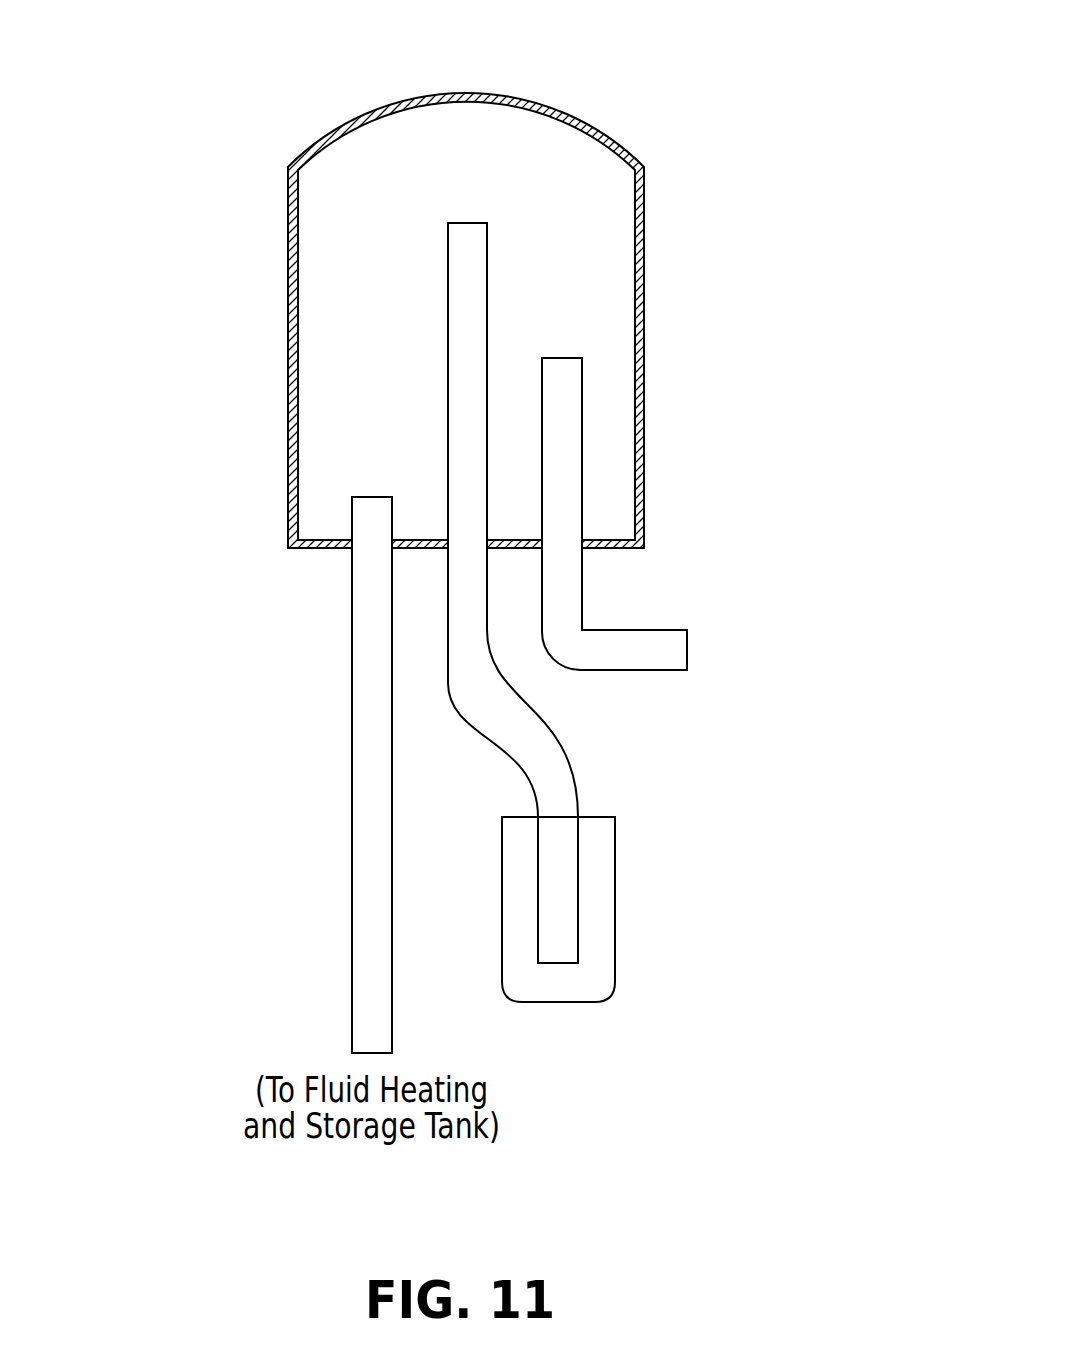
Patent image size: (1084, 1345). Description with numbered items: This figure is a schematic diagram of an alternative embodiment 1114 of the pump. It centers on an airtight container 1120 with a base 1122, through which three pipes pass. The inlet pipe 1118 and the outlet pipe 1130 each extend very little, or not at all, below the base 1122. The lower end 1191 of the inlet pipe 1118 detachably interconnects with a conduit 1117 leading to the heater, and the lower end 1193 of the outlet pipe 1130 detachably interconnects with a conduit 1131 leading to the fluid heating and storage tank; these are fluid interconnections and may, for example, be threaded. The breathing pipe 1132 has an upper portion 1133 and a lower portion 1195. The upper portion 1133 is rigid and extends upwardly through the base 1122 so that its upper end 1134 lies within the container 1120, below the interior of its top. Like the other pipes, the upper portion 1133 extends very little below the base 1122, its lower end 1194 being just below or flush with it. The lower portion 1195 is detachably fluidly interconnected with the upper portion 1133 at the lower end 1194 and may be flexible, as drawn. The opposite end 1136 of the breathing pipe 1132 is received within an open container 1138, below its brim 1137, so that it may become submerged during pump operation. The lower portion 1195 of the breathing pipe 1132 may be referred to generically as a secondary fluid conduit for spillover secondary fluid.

The alternative embodiment of the pump 1114 is at (262, 251).
The airtight container 1120 is at (343, 120).
The base 1122 is at (313, 548).
The outlet pipe 1130 is at (370, 497).
The conduit 1131 is at (352, 838).
The breathing pipe 1132 is at (429, 516).
The upper portion 1133 is at (448, 295).
The upper end 1134 is at (467, 223).
The opposite end 1136 is at (568, 963).
The brim 1137 is at (523, 817).
The open container 1138 is at (615, 862).
The inlet pipe 1118 is at (582, 398).
The conduit 1117 is at (660, 630).
The lower end 1191 is at (562, 550).
The lower end 1193 is at (372, 550).
The lower end 1194 is at (470, 548).
The lower portion 1195 is at (545, 740).